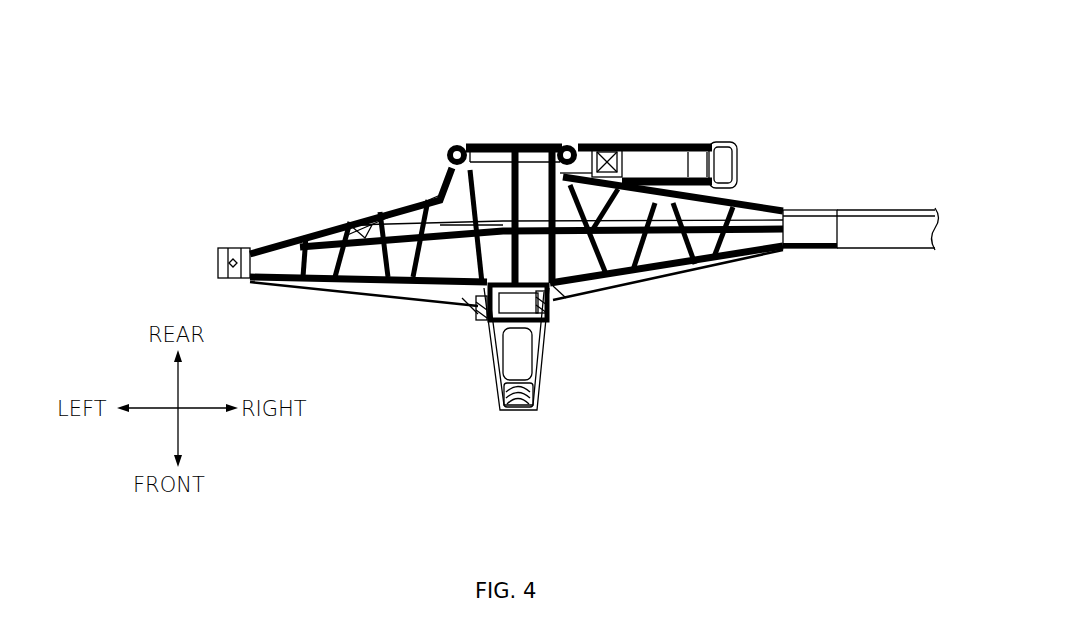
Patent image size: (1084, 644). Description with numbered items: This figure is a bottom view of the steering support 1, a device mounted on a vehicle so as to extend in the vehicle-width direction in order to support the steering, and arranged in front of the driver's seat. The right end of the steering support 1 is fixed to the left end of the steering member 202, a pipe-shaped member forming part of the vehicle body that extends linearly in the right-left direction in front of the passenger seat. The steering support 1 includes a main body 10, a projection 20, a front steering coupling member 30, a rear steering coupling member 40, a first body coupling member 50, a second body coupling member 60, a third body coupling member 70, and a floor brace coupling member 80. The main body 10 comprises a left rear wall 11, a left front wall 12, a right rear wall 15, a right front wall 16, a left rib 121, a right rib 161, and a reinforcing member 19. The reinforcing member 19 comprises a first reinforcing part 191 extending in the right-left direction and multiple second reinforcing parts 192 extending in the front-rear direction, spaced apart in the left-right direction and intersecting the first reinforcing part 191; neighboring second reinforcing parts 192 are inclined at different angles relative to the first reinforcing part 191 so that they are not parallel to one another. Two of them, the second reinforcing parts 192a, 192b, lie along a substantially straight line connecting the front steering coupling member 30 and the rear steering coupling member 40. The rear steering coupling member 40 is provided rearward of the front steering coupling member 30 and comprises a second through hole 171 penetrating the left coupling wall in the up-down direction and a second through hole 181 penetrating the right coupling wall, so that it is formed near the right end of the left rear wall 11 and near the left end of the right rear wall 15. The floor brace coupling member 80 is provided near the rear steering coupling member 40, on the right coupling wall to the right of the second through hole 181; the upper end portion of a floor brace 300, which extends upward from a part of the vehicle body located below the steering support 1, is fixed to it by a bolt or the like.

The steering support 1 is at (697, 76).
The main body 10 is at (673, 296).
The left rear wall 11 is at (330, 213).
The left front wall 12 is at (343, 286).
The left rib 121 is at (406, 300).
The right rear wall 15 is at (749, 207).
The right front wall 16 is at (716, 268).
The right rib 161 is at (633, 292).
The reinforcing member 19 is at (365, 231).
The first reinforcing part 191 is at (402, 236).
The second reinforcing parts 192 is at (419, 197).
The second reinforcing part 192a is at (469, 324).
The second reinforcing part 192b is at (561, 297).
The second through hole 171 is at (455, 145).
The second through hole 181 is at (567, 145).
The rear steering coupling member 40 is at (563, 141).
The floor brace coupling member 80 is at (619, 131).
The floor brace 300 is at (680, 146).
The projection 20 is at (555, 380).
The front steering coupling member 30 is at (468, 333).
The first body coupling member 50 is at (525, 418).
The second body coupling member 60 is at (206, 263).
The third body coupling member 70 is at (801, 264).
The steering member 202 is at (890, 250).